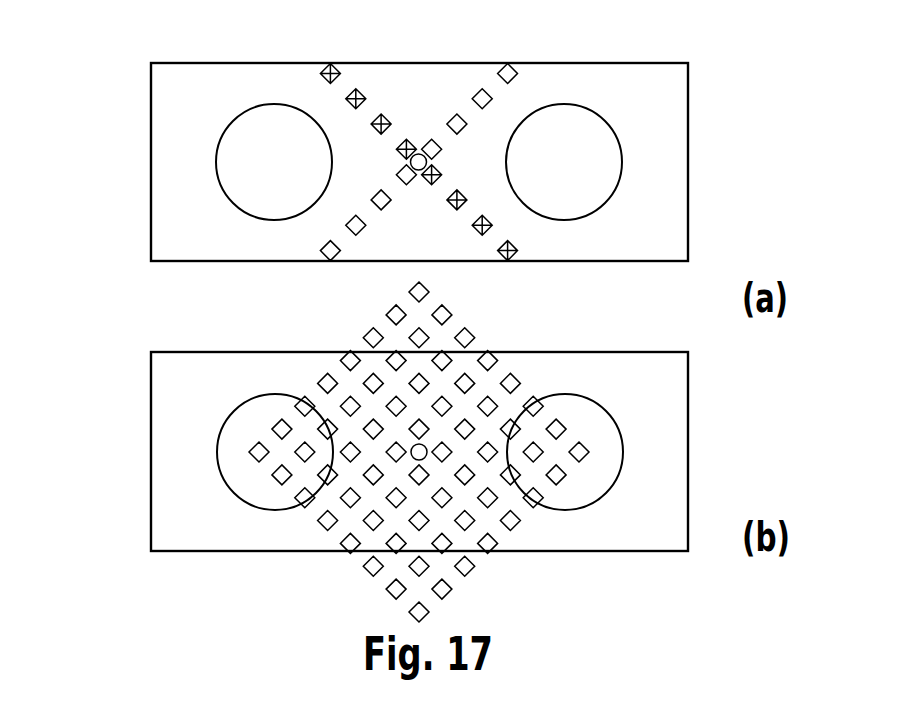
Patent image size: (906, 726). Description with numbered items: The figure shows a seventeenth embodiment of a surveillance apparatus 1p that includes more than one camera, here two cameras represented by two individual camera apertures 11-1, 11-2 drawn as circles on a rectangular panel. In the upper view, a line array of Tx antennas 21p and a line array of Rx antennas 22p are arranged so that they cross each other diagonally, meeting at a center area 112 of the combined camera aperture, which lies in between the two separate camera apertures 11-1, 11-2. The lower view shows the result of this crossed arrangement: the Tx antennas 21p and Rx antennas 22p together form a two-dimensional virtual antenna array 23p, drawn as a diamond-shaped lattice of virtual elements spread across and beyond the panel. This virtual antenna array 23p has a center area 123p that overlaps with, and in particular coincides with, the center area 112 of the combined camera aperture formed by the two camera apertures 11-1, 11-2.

The surveillance apparatus 1p is at (120, 70).
The camera aperture 11-1 is at (216, 162).
The camera aperture 11-2 is at (622, 162).
The line array of Tx antennas 21p is at (478, 91).
The line array of Rx antennas 22p is at (359, 89).
The center area of the combined camera aperture 112 is at (421, 171).
The center area of the virtual antenna array 123p is at (416, 444).
The two-dimensional virtual antenna array 23p is at (473, 336).